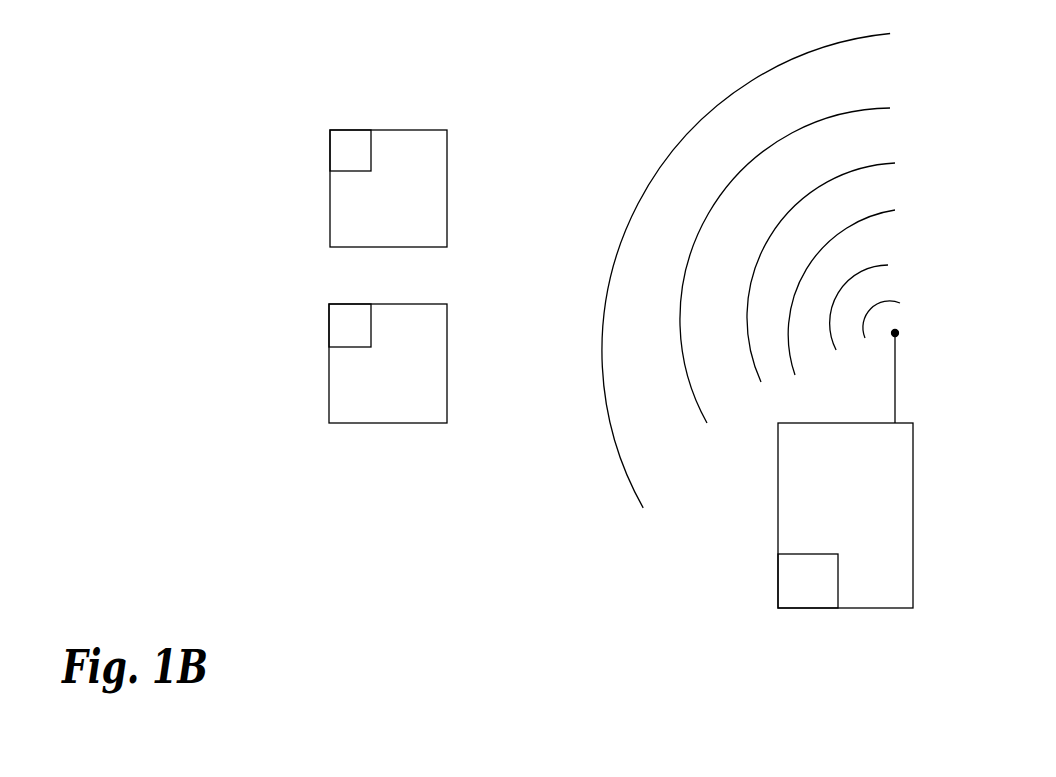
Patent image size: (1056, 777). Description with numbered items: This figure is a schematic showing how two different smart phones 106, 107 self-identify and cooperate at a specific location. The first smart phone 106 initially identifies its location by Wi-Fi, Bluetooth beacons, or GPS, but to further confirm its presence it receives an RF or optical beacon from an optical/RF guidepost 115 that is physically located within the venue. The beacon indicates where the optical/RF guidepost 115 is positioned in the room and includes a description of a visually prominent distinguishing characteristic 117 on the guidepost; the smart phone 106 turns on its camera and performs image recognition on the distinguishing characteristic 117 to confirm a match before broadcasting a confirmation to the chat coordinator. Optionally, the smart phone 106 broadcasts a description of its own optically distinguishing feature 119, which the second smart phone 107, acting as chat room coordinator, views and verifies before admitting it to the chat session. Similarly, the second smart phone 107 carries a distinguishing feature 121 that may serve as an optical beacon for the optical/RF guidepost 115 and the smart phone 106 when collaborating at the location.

The smart phone 106 is at (447, 210).
The smart phone 107 is at (447, 373).
The optical/RF guidepost 115 is at (913, 562).
The distinguishing characteristic 117 is at (788, 608).
The optically distinguishing feature 119 is at (352, 130).
The distinguishing feature 121 is at (337, 304).